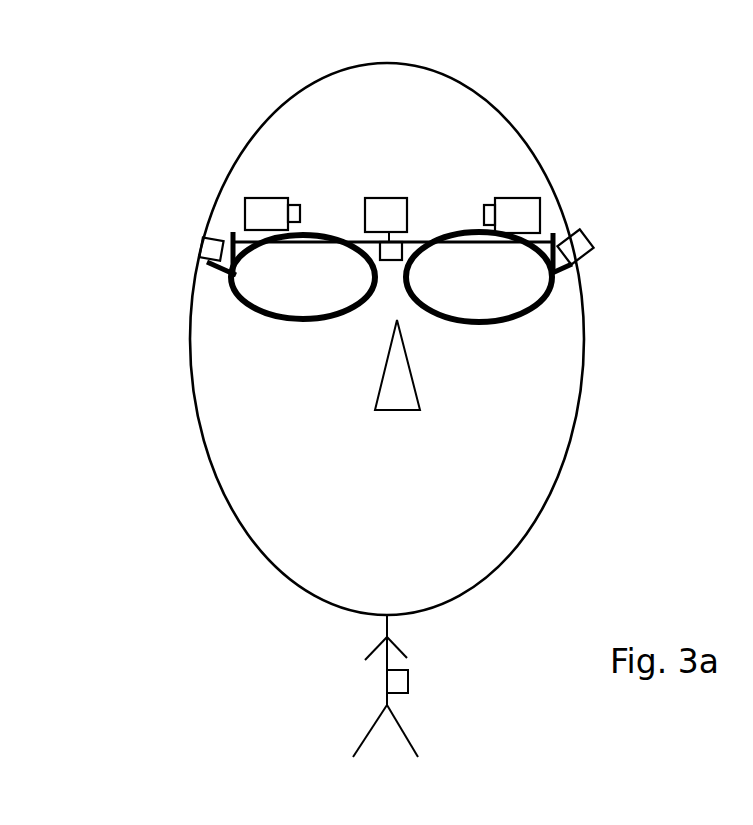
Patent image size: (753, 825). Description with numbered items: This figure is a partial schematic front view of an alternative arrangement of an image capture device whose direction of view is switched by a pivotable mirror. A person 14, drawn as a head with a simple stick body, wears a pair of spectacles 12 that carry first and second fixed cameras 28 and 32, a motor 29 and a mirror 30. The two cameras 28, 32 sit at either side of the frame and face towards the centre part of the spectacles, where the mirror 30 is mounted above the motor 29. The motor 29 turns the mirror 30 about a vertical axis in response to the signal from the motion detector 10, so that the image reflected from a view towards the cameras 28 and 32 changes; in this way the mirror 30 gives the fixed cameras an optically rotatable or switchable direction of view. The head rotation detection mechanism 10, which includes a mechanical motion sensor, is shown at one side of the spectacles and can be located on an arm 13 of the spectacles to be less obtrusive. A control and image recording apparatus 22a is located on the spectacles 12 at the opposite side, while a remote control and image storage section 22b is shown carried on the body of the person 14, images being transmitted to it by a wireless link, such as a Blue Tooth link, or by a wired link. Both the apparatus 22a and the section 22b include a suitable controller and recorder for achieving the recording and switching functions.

The head rotation detection mechanism 10 is at (200, 248).
The pair of spectacles 12 is at (542, 310).
The arm 13 is at (575, 275).
The person 14 is at (255, 442).
The control and image recording apparatus 22a is at (588, 241).
The remote control and image storage section 22b is at (412, 695).
The first fixed camera 28 is at (243, 207).
The motor 29 is at (389, 261).
The mirror 30 is at (372, 198).
The second fixed camera 32 is at (545, 208).